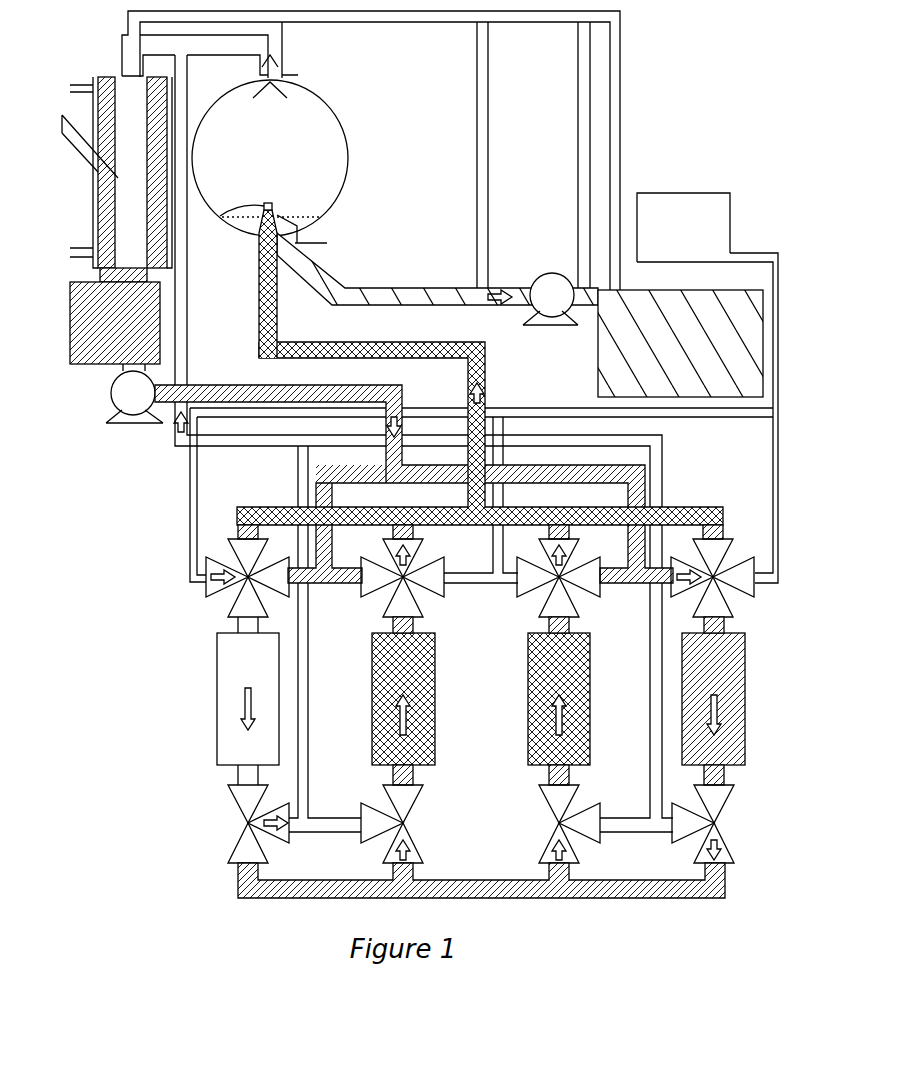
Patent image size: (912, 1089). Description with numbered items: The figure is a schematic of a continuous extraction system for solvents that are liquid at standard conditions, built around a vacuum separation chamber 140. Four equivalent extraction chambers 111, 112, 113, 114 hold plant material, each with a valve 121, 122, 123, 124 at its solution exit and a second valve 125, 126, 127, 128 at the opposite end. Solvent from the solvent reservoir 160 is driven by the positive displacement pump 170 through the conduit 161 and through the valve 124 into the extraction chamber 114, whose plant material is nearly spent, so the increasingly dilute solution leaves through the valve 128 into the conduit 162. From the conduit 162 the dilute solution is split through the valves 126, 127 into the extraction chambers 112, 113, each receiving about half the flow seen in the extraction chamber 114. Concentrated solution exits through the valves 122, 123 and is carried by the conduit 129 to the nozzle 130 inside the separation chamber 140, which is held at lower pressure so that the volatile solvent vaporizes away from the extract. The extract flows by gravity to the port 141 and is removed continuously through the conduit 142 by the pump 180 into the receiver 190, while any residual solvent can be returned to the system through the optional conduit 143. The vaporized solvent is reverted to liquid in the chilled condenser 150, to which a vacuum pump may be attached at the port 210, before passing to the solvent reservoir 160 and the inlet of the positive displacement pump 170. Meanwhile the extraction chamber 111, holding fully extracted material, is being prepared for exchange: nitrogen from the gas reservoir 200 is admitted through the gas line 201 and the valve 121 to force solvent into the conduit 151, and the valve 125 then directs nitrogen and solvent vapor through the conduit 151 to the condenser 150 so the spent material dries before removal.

The extraction chamber 111 is at (240, 682).
The extraction chamber 112 is at (400, 680).
The extraction chamber 113 is at (548, 680).
The extraction chamber 114 is at (705, 680).
The valve 121 is at (240, 555).
The valve 122 is at (400, 557).
The valve 123 is at (552, 557).
The valve 124 is at (707, 560).
The valve 125 is at (243, 815).
The valve 126 is at (395, 815).
The valve 127 is at (553, 815).
The valve 128 is at (710, 815).
The conduit 129 is at (468, 403).
The nozzle 130 is at (262, 262).
The separation chamber 140 is at (288, 130).
The port 141 is at (327, 243).
The conduit 142 is at (413, 290).
The conduit 143 is at (433, 22).
The condenser 150 is at (118, 88).
The conduit 151 is at (288, 442).
The solvent reservoir 160 is at (93, 347).
The conduit 161 is at (397, 388).
The conduit 162 is at (505, 885).
The positive displacement pump 170 is at (132, 408).
The pump 180 is at (548, 313).
The receiver 190 is at (598, 333).
The gas reservoir 200 is at (707, 208).
The gas line 201 is at (773, 487).
The port 210 is at (62, 118).